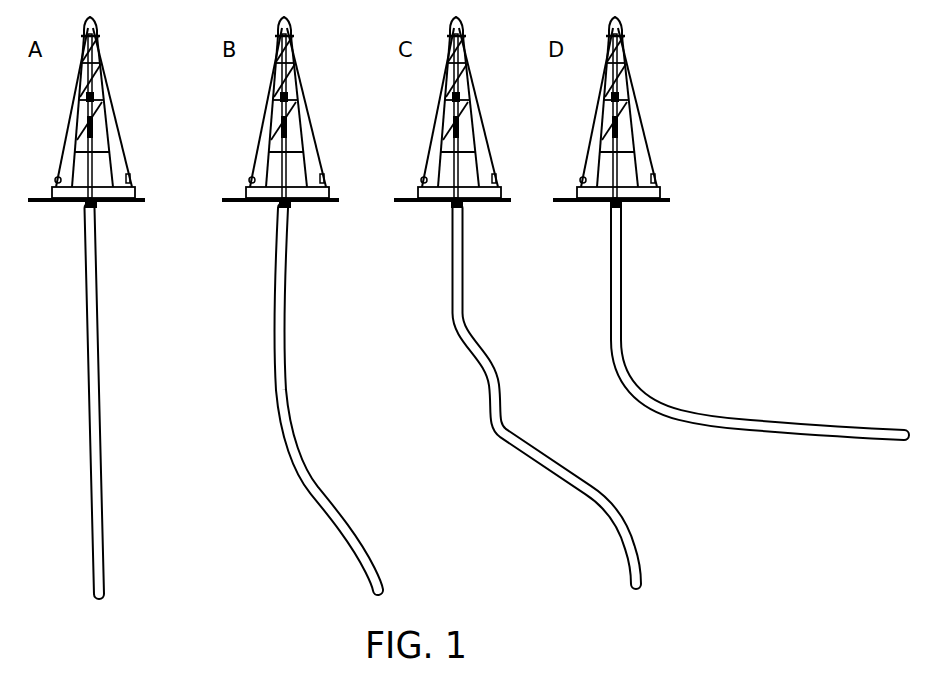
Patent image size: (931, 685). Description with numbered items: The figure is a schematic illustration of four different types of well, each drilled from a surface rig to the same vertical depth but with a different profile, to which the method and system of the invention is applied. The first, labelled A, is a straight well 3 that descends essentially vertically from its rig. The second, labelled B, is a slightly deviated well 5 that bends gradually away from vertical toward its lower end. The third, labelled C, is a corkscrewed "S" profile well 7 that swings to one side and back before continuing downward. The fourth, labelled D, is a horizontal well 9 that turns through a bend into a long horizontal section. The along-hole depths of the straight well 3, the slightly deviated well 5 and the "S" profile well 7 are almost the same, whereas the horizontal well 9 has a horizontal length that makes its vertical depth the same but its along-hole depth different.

The straight well 3 is at (95, 279).
The slightly deviated well 5 is at (288, 280).
The corkscrewed "S" profile well 7 is at (463, 282).
The horizontal well 9 is at (622, 280).